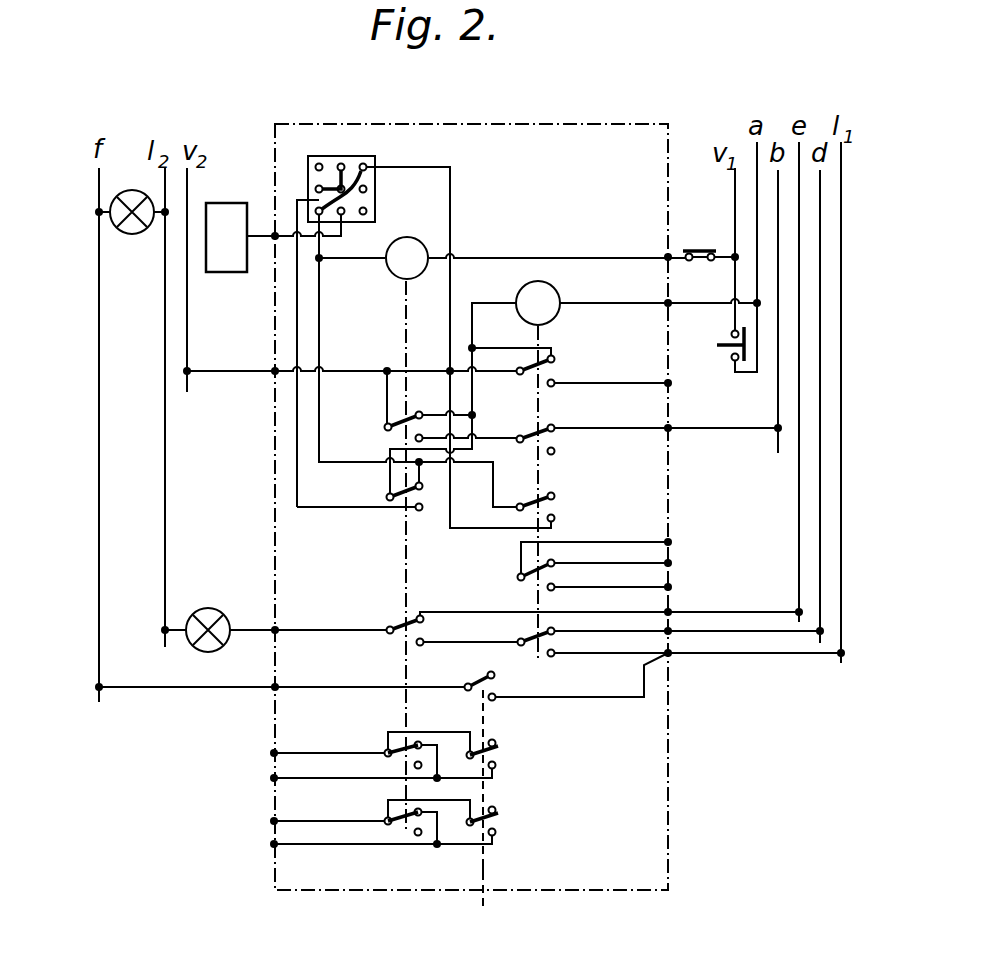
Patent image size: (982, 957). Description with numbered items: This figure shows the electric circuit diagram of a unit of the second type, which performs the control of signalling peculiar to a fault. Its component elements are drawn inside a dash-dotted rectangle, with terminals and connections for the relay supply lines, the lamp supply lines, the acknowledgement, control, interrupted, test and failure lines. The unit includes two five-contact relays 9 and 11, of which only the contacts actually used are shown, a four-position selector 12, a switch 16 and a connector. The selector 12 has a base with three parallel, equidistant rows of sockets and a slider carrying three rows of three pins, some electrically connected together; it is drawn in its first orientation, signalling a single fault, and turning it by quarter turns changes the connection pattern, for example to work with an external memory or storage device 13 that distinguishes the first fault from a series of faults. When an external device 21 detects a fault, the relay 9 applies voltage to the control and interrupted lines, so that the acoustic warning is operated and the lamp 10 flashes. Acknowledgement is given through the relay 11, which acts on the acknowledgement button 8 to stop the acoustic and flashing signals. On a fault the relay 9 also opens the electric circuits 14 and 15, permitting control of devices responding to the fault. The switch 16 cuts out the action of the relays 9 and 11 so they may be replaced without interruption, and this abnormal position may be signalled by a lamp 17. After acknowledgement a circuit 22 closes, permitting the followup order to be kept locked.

The acknowledgement button 8 is at (717, 347).
The five-contact relay 9 is at (410, 237).
The lamp 10 is at (214, 652).
The five-contact relay 11 is at (539, 281).
The four-position selector 12 is at (345, 157).
The external memory or storage device 13 is at (232, 203).
The electric circuit 14 is at (274, 778).
The electric circuit 15 is at (274, 844).
The switch 16 is at (483, 871).
The lamp 17 is at (140, 234).
The external device 21 is at (698, 251).
The circuit 22 is at (668, 384).